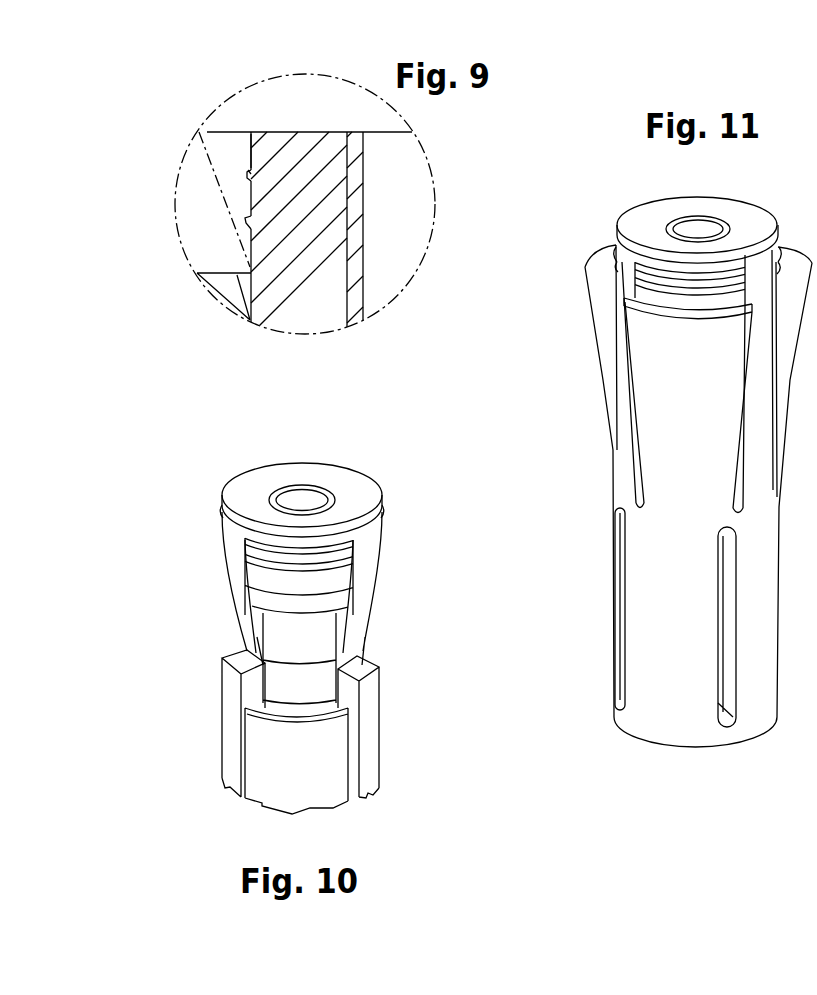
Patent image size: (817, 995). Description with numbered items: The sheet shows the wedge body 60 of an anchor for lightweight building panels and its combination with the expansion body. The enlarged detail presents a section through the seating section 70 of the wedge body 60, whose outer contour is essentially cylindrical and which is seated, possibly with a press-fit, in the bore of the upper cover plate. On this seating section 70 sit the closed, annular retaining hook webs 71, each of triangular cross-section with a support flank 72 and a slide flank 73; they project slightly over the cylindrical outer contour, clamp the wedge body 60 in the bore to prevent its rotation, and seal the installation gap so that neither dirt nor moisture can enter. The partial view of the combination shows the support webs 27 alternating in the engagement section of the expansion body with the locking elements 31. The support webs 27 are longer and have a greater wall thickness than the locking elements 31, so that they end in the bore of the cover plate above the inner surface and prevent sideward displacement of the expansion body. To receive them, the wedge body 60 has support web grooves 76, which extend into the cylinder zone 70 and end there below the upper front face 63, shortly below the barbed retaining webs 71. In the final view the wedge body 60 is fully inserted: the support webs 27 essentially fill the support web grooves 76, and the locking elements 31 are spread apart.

In FIG. 10, the support webs 27 is at (230, 679).
In FIG. 11, the support webs 27 is at (623, 385).
In FIG. 10, the locking elements 31 is at (257, 742).
In FIG. 11, the locking elements 31 is at (661, 407).
In FIG. 9, the wedge body 60 is at (272, 279).
In FIG. 10, the upper front face 63 is at (254, 496).
In FIG. 9, the seating section 70 is at (248, 150).
In FIG. 10, the seating section 70 is at (217, 560).
In FIG. 9, the retaining hook webs 71 is at (249, 178).
In FIG. 10, the retaining hook webs 71 is at (245, 558).
In FIG. 9, the support flank 72 is at (248, 174).
In FIG. 9, the slide flank 73 is at (250, 183).
In FIG. 10, the support web grooves 76 is at (235, 573).